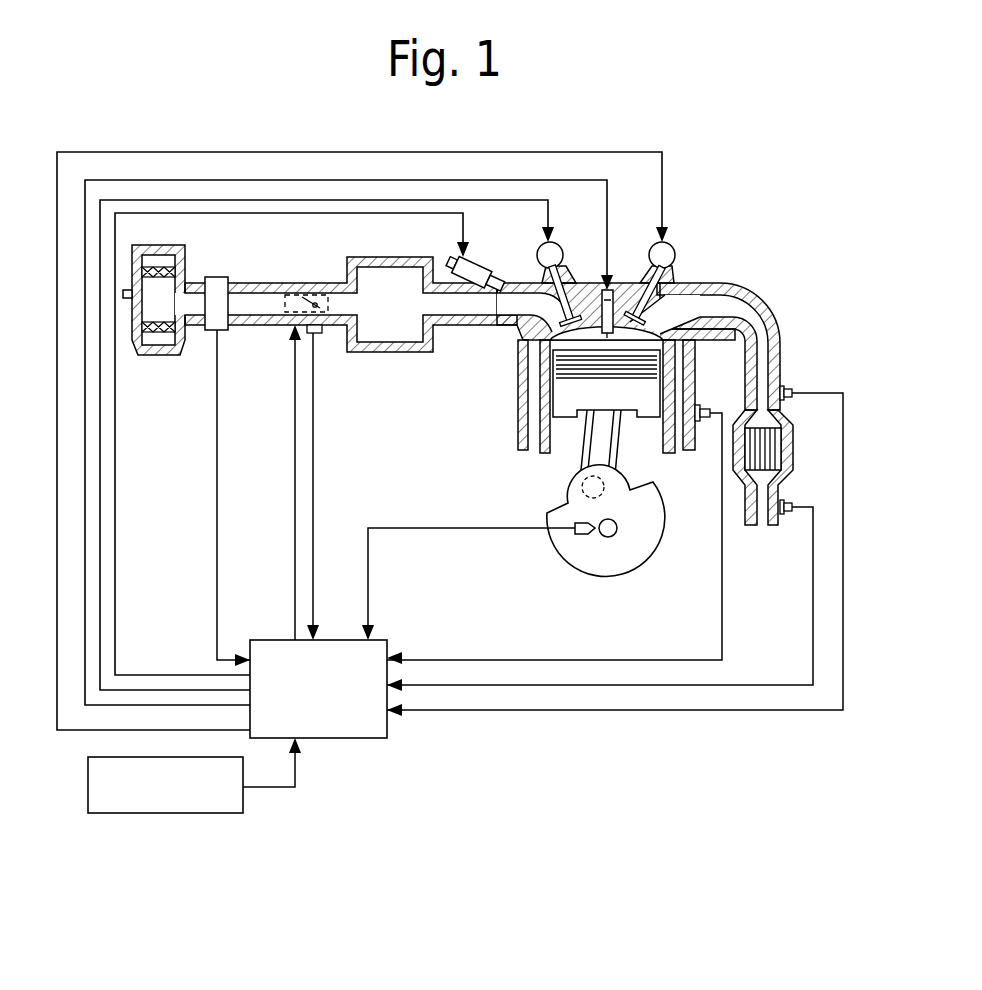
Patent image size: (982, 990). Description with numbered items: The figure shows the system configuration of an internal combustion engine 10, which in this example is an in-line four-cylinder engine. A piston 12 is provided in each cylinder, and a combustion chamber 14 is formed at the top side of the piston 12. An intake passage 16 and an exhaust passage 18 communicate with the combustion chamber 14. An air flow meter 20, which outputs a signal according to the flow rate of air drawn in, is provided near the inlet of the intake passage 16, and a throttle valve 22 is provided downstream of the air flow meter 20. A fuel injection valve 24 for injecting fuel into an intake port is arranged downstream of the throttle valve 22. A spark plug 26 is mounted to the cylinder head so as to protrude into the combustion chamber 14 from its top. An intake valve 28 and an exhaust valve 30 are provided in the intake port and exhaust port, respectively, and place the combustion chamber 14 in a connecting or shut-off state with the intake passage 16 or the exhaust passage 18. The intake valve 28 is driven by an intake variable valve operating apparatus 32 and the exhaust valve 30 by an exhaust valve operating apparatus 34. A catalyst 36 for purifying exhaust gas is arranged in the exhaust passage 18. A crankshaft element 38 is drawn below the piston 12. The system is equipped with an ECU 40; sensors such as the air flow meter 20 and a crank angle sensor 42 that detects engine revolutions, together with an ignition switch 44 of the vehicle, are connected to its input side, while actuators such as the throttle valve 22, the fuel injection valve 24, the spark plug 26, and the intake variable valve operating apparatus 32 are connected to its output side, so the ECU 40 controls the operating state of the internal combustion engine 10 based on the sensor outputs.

The internal combustion engine 10 is at (506, 406).
The piston 12 is at (575, 402).
The combustion chamber 14 is at (667, 352).
The intake passage 16 is at (348, 266).
The exhaust passage 18 is at (742, 300).
The air flow meter 20 is at (220, 280).
The throttle valve 22 is at (307, 297).
The fuel injection valve 24 is at (468, 268).
The spark plug 26 is at (610, 290).
The intake valve 28 is at (500, 280).
The exhaust valve 30 is at (690, 292).
The intake variable valve operating apparatus 32 is at (556, 246).
The exhaust valve operating apparatus 34 is at (672, 252).
The catalyst 36 is at (778, 445).
The crankshaft 38 is at (618, 528).
The ECU 40 is at (387, 645).
The crank angle sensor 42 is at (587, 537).
The ignition switch 44 is at (103, 814).